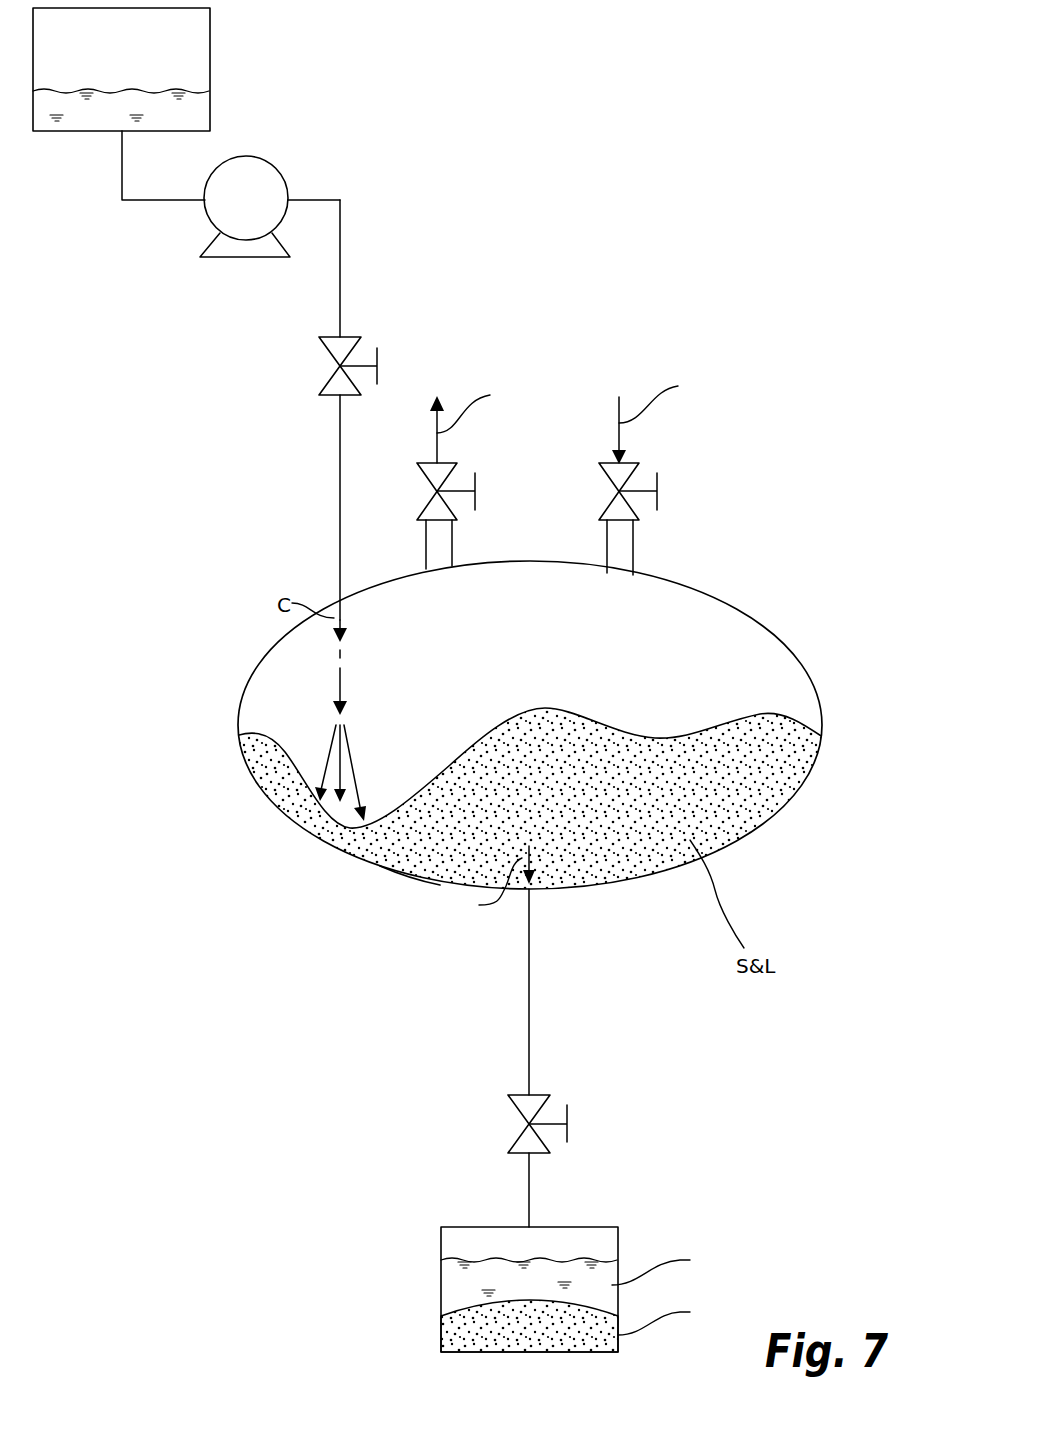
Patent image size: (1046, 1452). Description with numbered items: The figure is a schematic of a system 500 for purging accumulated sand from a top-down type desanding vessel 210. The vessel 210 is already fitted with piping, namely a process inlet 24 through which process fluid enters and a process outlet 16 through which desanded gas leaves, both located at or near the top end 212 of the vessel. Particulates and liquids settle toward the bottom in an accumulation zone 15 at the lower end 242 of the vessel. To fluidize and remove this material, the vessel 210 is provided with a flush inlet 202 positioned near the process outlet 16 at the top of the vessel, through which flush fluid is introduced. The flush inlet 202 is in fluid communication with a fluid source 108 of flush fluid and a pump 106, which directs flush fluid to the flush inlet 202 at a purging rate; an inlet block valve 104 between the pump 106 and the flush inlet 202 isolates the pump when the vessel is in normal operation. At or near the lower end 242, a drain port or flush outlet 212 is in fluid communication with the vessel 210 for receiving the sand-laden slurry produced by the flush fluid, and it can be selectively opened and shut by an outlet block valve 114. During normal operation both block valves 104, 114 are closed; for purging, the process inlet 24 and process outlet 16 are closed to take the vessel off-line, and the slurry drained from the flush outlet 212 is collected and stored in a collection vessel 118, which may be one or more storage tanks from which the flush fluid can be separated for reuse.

The fluid source 108 is at (210, 58).
The pump 106 is at (266, 211).
The inlet block valve 104 is at (352, 342).
The flush inlet 202 is at (332, 543).
The process outlet 16 is at (452, 546).
The process inlet 24 is at (633, 546).
The flush outlet 212 is at (682, 580).
The desanding vessel 210 is at (822, 723).
The accumulation zone 15 is at (610, 805).
The lower end 242 is at (410, 875).
The outlet block valve 114 is at (540, 1102).
The collection vessel 118 is at (618, 1248).
The system 500 is at (719, 281).